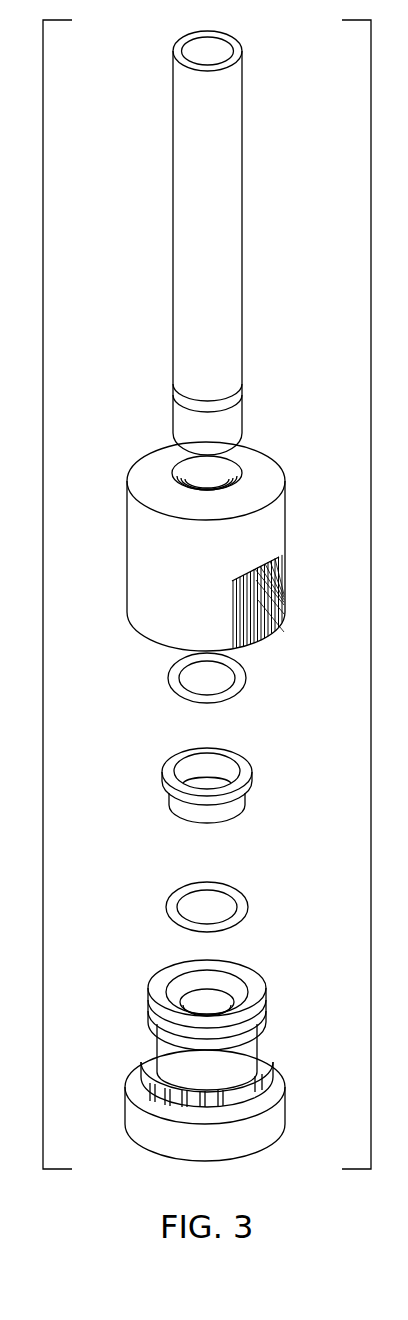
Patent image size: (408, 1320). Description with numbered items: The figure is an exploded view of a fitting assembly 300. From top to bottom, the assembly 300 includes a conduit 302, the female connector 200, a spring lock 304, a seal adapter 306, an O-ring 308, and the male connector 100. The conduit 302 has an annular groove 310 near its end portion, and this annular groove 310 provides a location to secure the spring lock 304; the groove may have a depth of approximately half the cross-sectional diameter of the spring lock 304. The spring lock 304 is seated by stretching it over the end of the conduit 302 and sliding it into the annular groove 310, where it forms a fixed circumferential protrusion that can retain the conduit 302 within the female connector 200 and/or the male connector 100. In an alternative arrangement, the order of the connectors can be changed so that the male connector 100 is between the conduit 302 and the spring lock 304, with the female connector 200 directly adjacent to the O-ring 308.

The fitting assembly 300 is at (131, 86).
The conduit 302 is at (242, 252).
The annular groove 310 is at (228, 399).
The female connector 200 is at (140, 438).
The spring lock 304 is at (170, 673).
The seal adapter 306 is at (250, 765).
The O-ring 308 is at (240, 890).
The male connector 100 is at (158, 964).